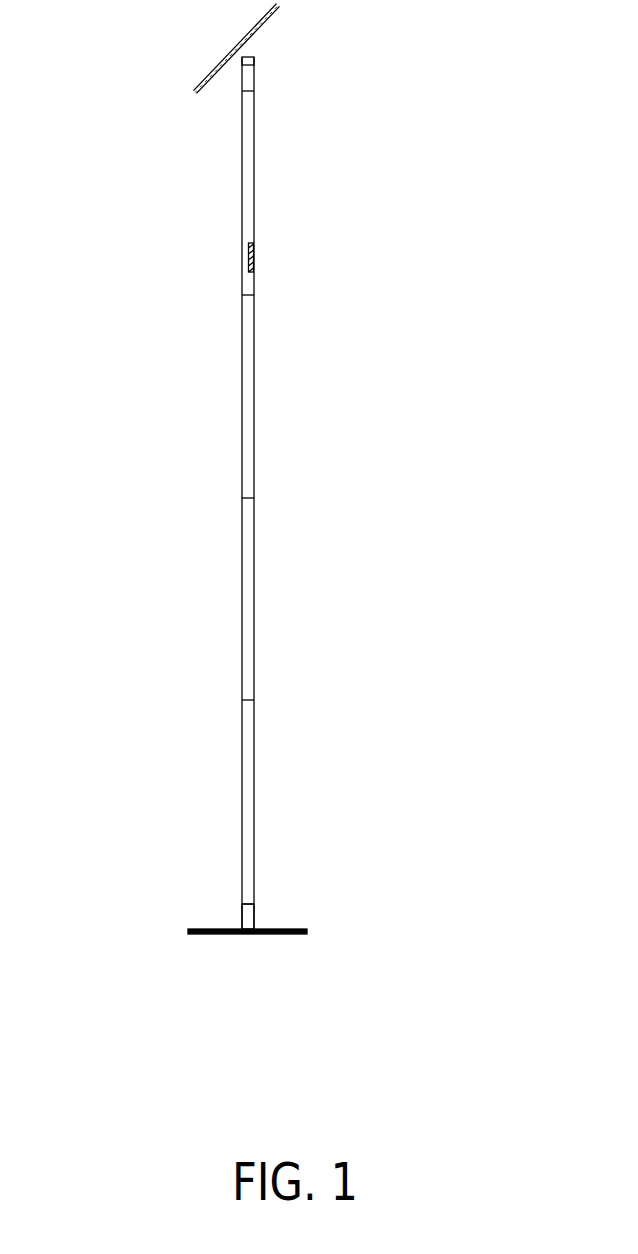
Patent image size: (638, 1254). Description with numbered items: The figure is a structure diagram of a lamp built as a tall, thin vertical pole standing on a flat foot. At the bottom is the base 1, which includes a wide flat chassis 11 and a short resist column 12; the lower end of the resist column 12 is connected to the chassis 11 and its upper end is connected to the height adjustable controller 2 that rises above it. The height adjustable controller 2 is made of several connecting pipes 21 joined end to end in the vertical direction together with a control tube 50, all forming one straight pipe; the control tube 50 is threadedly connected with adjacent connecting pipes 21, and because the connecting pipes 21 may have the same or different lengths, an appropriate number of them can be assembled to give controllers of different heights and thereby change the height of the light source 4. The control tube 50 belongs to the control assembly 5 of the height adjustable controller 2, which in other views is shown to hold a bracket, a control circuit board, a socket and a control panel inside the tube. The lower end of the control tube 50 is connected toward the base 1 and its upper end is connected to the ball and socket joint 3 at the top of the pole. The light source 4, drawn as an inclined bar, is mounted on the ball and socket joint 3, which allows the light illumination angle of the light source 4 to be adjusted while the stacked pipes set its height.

The base 1 is at (357, 923).
The chassis 11 is at (308, 933).
The resist column 12 is at (255, 914).
The height adjustable controller 2 is at (337, 492).
The connecting pipe 21 is at (255, 402).
The ball and socket joint 3 is at (283, 80).
The light source 4 is at (205, 46).
The control assembly 5 is at (283, 266).
The control tube 50 is at (255, 140).